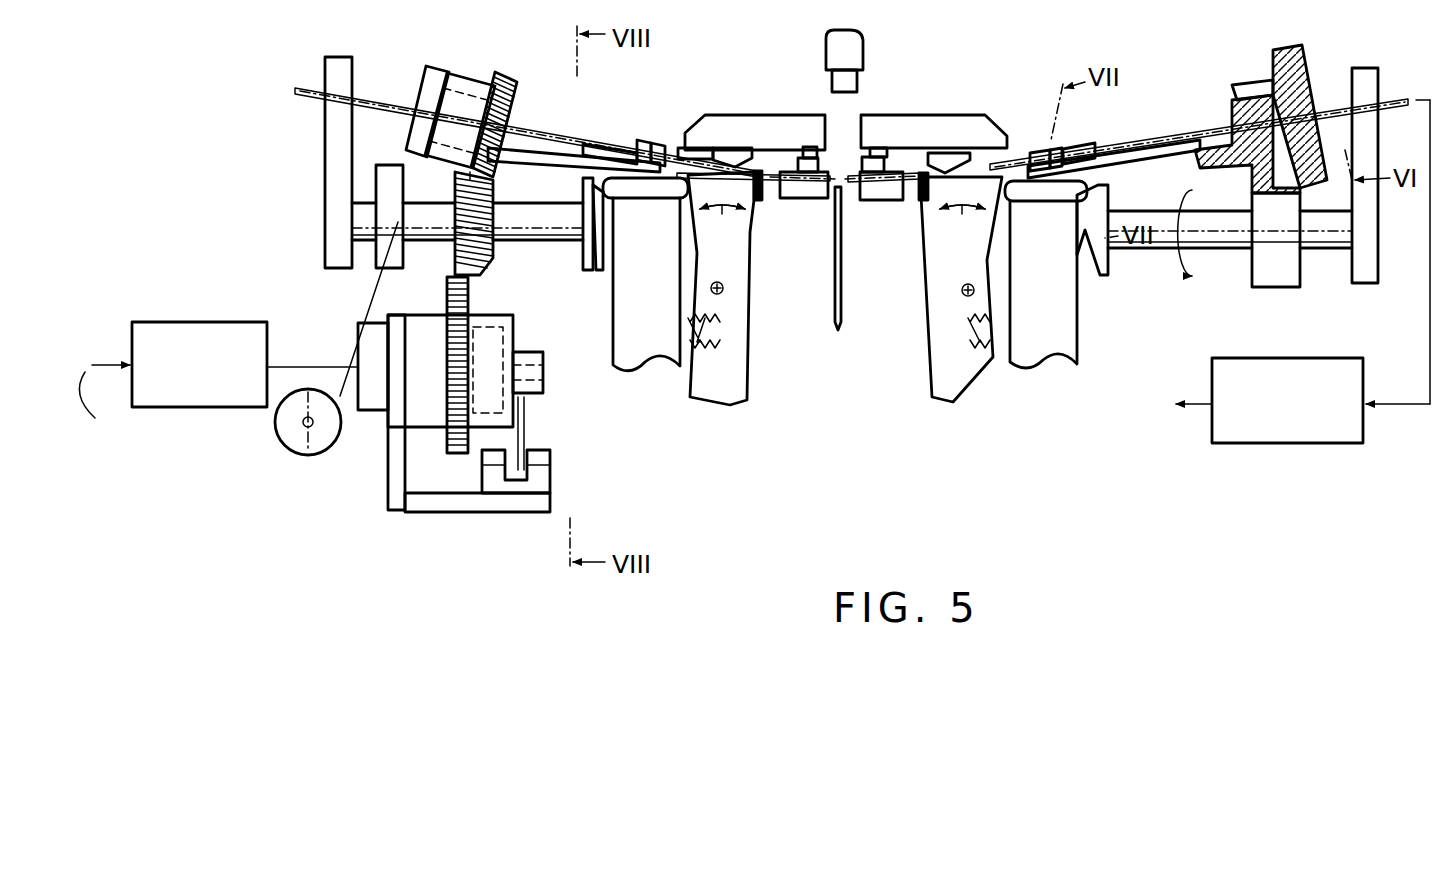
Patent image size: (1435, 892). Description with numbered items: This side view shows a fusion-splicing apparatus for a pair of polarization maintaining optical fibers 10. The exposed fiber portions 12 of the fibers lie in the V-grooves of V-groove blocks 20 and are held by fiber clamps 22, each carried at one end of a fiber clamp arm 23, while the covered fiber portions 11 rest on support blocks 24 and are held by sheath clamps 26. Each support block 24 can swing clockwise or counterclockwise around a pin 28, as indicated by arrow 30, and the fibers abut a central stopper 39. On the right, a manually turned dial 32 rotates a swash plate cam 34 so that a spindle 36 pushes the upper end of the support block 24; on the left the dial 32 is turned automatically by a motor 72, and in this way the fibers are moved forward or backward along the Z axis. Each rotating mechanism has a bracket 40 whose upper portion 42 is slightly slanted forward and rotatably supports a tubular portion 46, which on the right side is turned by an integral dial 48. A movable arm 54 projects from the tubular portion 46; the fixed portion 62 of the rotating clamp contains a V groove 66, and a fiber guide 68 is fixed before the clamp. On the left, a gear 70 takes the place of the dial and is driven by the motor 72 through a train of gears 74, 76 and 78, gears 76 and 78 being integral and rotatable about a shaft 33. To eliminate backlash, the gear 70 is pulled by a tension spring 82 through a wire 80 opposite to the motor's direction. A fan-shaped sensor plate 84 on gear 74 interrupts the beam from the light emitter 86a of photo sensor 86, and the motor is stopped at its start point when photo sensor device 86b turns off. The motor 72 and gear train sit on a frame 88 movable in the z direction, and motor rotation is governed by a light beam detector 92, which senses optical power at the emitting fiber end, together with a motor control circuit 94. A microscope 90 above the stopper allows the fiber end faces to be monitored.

The polarization maintaining optical fiber 10 is at (302, 88).
The covered fiber portion 11 is at (735, 197).
The exposed fiber portion 12 is at (818, 198).
The V-groove block 20 is at (798, 198).
The fiber clamp 22 is at (808, 148).
The fiber clamp arm 23 is at (755, 130).
The support block 24 is at (745, 268).
The sheath clamp 26 is at (735, 152).
The pin 28 is at (724, 288).
The arrow 30 is at (842, 225).
The dial 32 is at (325, 194).
The shaft 33 is at (578, 238).
The swash plate cam 34 is at (595, 262).
The spindle 36 is at (660, 200).
The stopper 39 is at (843, 272).
The bracket 40 is at (1263, 268).
The upper portion of bracket 42 is at (462, 74).
The tubular portion 46 is at (1255, 98).
The dial 48 is at (1288, 56).
The movable arm 54 is at (535, 148).
The fixed portion of clamp 62 is at (640, 140).
The V groove 66 is at (662, 143).
The fiber guide 68 is at (592, 145).
The gear 70 is at (513, 74).
The motor 72 is at (428, 402).
The gear 74 is at (447, 338).
The gear 76 is at (455, 248).
The gear 78 is at (495, 250).
The wire 80 is at (377, 290).
The tension spring 82 is at (312, 455).
The sensor plate 84 is at (526, 412).
The photo sensor 86 is at (600, 499).
The light emitter 86a is at (490, 478).
The photo sensor device 86b is at (550, 465).
The frame 88 is at (390, 506).
The microscope 90 is at (848, 52).
The detector 92 is at (1326, 358).
The control circuit 94 is at (198, 322).